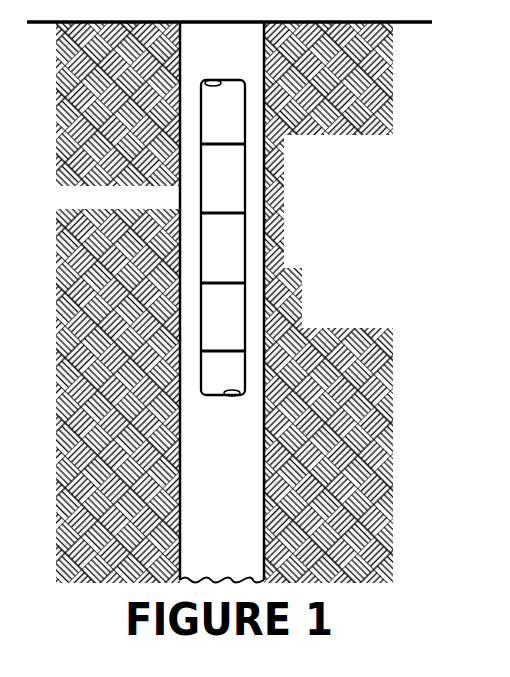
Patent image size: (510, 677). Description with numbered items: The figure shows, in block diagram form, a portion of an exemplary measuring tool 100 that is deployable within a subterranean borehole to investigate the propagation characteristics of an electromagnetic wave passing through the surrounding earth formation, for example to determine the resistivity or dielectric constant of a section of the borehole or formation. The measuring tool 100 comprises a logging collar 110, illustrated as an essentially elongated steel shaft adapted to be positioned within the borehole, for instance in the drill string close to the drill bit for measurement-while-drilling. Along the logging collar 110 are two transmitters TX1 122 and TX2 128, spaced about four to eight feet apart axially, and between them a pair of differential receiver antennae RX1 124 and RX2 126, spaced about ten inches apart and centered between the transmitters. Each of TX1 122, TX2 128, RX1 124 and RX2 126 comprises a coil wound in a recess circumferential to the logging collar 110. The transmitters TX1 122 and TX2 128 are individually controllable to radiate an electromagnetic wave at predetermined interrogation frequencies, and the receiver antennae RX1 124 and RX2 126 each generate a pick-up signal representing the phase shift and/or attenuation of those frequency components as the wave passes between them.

The measuring tool 100 is at (219, 238).
The logging collar 110 is at (244, 245).
The transmitter TX1 122 is at (217, 147).
The receiver antenna RX1 124 is at (222, 212).
The receiver antenna RX2 126 is at (218, 281).
The transmitter TX2 128 is at (221, 350).